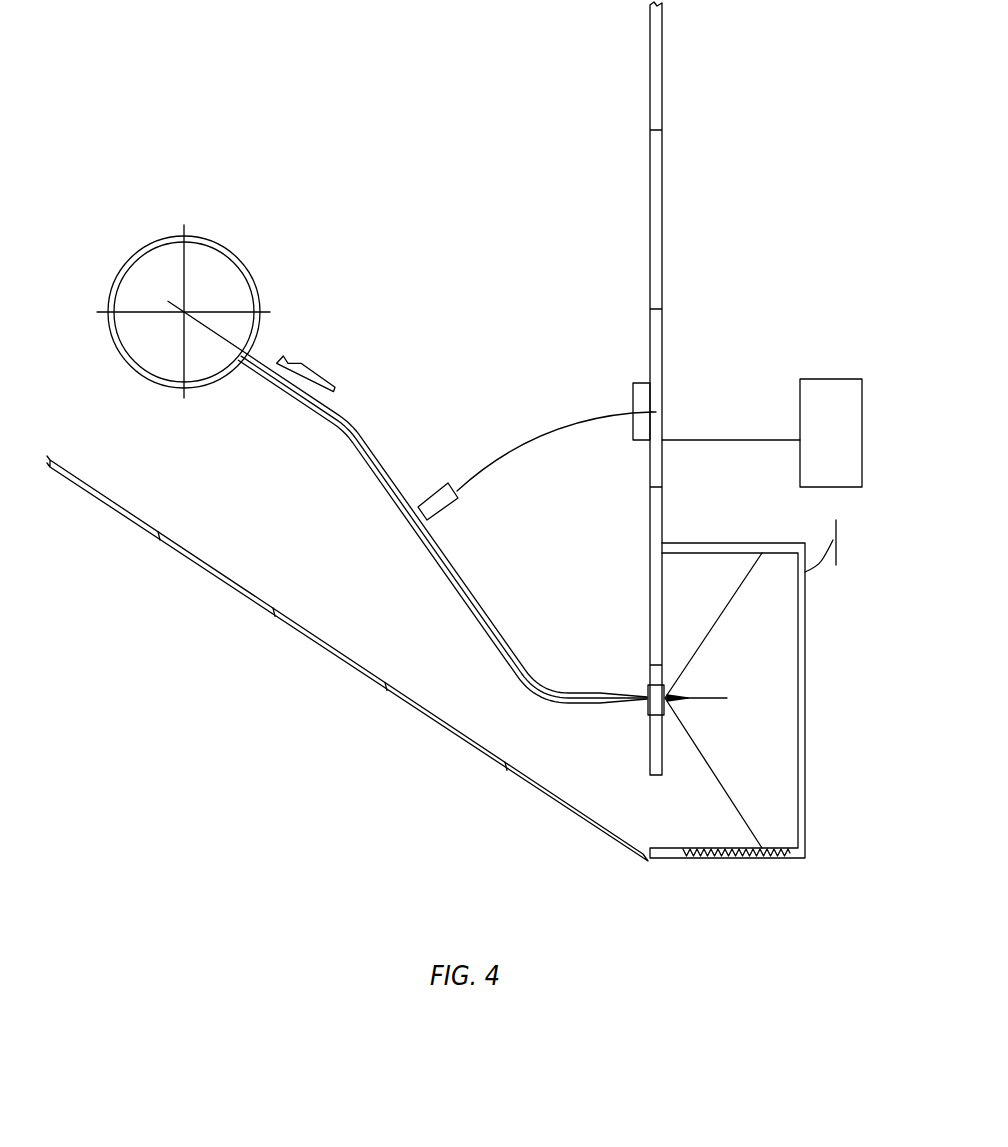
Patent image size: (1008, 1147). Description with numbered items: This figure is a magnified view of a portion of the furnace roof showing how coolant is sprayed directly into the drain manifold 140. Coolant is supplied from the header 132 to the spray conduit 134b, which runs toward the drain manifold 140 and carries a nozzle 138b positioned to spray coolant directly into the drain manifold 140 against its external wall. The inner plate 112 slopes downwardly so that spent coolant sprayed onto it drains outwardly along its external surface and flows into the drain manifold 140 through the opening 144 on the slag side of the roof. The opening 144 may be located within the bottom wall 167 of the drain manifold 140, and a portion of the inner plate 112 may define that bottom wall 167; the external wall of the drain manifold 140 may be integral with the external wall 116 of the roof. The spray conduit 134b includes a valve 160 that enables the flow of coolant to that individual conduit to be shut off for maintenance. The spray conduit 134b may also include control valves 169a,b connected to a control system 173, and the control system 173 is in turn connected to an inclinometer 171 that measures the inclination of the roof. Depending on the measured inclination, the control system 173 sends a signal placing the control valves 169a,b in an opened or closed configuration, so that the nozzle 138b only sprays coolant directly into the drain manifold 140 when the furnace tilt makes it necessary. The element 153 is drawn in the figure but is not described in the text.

The inner plate 112 is at (213, 575).
The external wall of the roof 116 is at (662, 87).
The header 132 is at (180, 259).
The spray conduit 134b is at (522, 663).
The nozzle 138b is at (678, 700).
The drain manifold 140 is at (805, 633).
The opening 144 is at (652, 828).
The floor 153 is at (700, 833).
The valve 160 is at (313, 375).
The bottom wall of the drain manifold 167 is at (770, 850).
The control valves 169a,b is at (494, 506).
The inclinometer 171 is at (663, 438).
The control system 173 is at (828, 379).